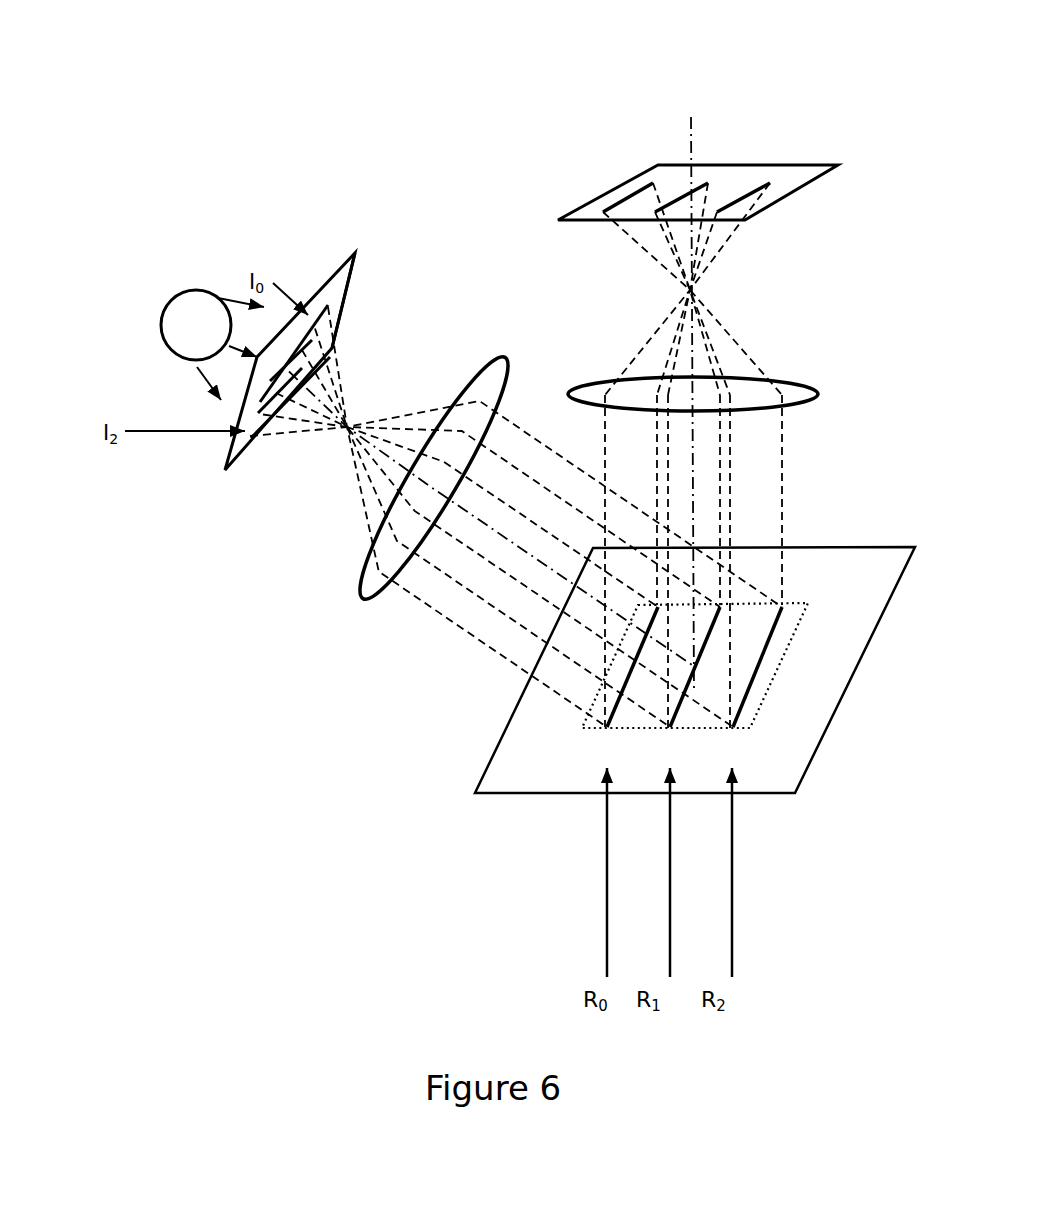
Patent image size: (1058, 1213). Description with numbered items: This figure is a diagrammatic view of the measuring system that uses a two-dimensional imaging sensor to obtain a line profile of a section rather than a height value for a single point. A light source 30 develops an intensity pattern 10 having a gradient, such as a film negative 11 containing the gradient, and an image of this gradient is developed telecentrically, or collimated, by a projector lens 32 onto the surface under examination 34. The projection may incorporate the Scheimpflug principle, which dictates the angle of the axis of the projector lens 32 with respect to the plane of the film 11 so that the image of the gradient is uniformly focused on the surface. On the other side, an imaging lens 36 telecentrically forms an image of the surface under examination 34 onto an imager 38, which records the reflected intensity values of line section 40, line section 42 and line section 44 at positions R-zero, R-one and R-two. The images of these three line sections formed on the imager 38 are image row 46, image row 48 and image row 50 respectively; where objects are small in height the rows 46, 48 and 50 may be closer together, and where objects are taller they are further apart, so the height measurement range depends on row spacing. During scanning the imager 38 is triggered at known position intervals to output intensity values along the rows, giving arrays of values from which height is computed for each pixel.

The intensity pattern 10 is at (214, 476).
The film negative 11 is at (350, 278).
The light source 30 is at (158, 309).
The projector lens 32 is at (348, 598).
The surface under examination 34 is at (563, 800).
The imaging lens 36 is at (822, 383).
The imager 38 is at (620, 183).
The line section 40 is at (617, 683).
The line section 42 is at (667, 695).
The line section 44 is at (737, 707).
The image row 46 is at (637, 148).
The image row 48 is at (700, 148).
The image row 50 is at (752, 155).